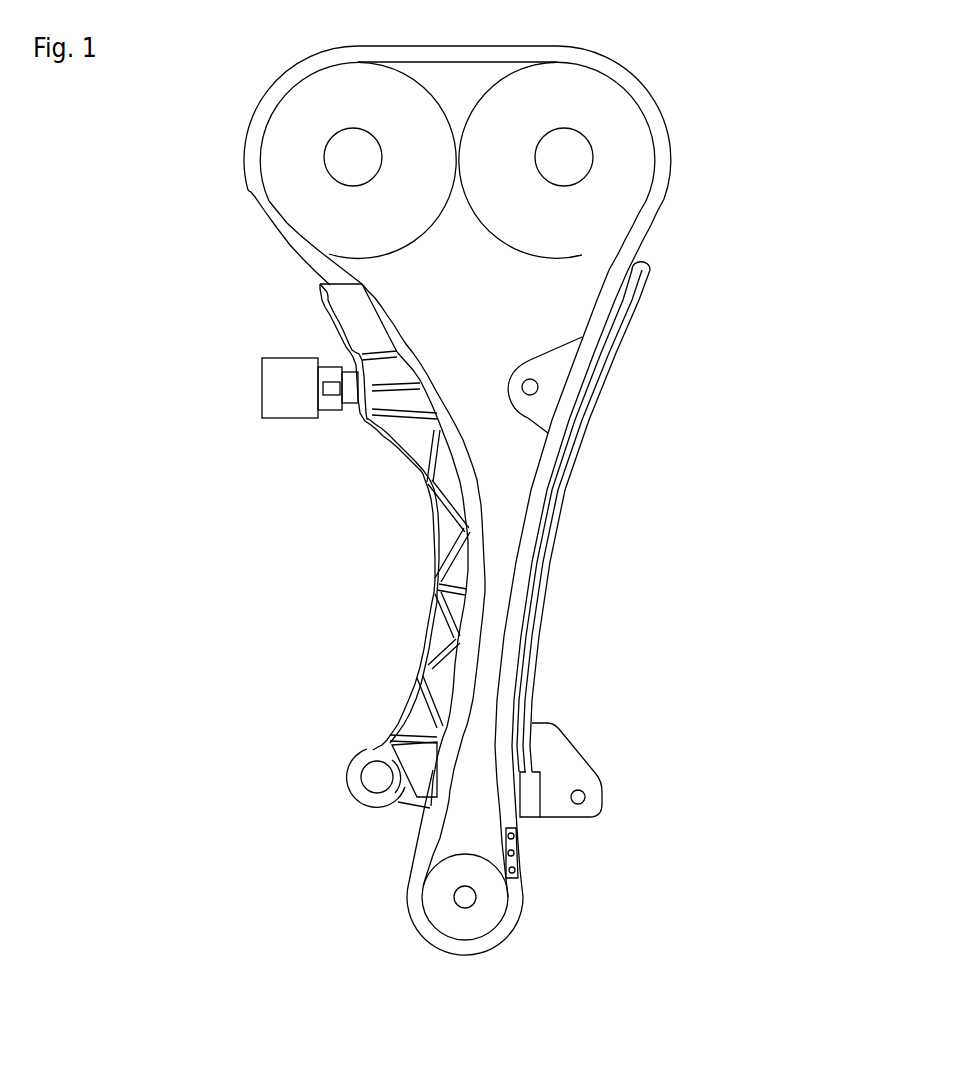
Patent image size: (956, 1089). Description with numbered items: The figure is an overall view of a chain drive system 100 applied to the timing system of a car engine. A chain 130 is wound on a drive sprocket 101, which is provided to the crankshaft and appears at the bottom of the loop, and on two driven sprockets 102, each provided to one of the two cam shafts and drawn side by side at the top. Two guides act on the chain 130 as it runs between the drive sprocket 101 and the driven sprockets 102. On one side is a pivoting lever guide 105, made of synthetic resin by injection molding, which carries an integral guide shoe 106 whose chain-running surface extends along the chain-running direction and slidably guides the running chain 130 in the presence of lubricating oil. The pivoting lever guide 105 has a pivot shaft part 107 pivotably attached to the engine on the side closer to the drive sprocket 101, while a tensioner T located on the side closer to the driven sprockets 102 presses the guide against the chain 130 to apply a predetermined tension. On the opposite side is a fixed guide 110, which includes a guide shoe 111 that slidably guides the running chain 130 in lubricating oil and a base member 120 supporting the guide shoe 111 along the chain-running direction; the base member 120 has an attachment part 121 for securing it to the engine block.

The chain drive system 100 is at (243, 106).
The drive sprocket 101 is at (437, 900).
The driven sprockets 102 is at (285, 172).
The pivoting lever guide 105 is at (432, 552).
The guide shoe 106 is at (473, 618).
The pivot shaft part 107 is at (372, 775).
The fixed guide 110 is at (543, 600).
The guide shoe 111 is at (573, 405).
The base member 120 is at (555, 521).
The attachment part 121 is at (552, 363).
The chain 130 is at (525, 852).
The tensioner T is at (273, 422).